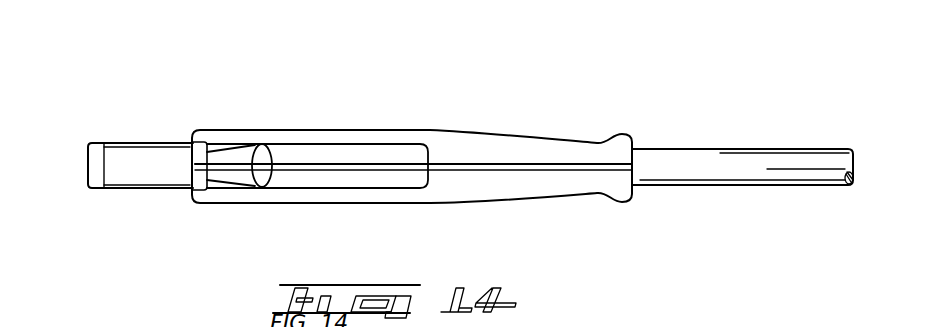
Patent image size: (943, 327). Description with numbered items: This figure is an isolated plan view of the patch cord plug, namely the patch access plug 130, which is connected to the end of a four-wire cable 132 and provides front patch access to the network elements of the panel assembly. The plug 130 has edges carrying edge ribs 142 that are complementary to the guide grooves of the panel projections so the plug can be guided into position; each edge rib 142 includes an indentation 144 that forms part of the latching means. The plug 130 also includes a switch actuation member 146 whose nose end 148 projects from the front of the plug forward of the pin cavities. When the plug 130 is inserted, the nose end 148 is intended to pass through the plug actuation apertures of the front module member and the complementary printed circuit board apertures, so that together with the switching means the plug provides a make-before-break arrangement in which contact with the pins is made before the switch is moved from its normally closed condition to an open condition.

The patch access plug 130 is at (512, 134).
The four-wire cable 132 is at (680, 163).
The edge ribs 142 is at (344, 155).
The indentation 144 is at (259, 155).
The switch actuation member 146 is at (143, 167).
The nose end 148 is at (96, 165).